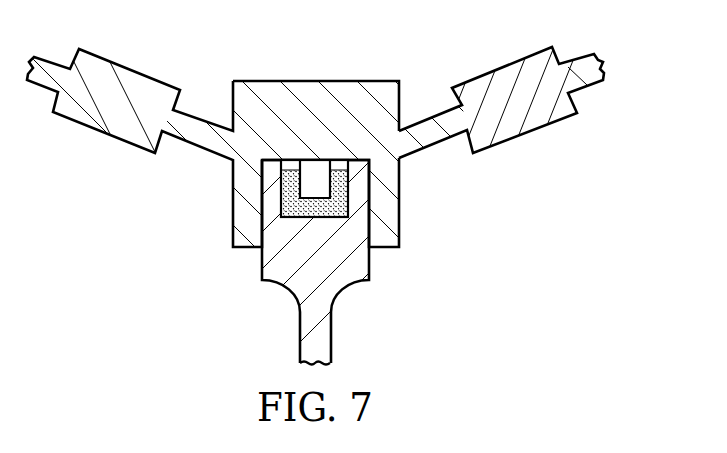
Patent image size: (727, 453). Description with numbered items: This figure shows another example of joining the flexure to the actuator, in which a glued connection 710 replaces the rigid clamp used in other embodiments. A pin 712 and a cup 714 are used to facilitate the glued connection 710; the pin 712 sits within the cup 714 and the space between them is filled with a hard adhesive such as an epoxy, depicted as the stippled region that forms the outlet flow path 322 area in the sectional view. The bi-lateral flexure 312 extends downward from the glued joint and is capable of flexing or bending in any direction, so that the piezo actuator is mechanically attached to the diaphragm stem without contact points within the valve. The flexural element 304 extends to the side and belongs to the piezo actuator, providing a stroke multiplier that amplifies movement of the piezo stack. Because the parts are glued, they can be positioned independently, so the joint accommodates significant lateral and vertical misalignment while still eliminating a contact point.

The glued connection 710 is at (249, 177).
The flexural element 304 is at (535, 137).
The bi-lateral flexure 312 is at (330, 340).
The outlet flow path 322 is at (346, 195).
The cup 714 is at (328, 217).
The pin 712 is at (316, 167).